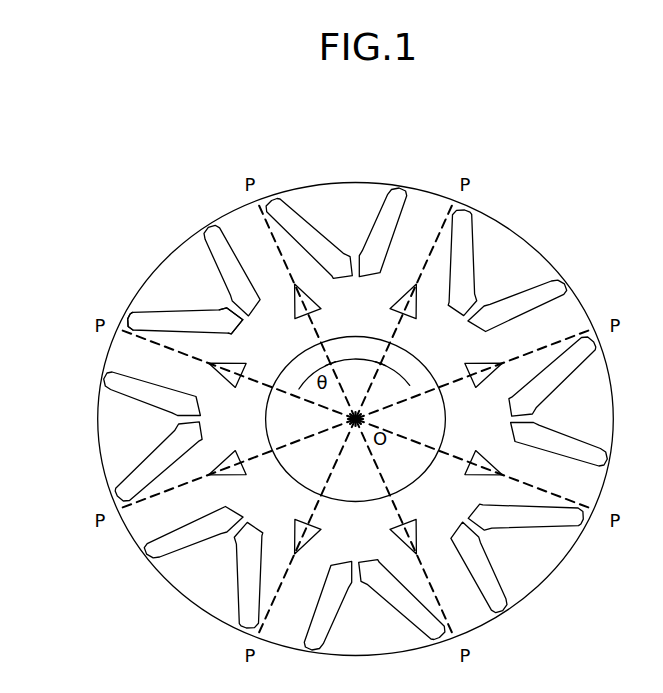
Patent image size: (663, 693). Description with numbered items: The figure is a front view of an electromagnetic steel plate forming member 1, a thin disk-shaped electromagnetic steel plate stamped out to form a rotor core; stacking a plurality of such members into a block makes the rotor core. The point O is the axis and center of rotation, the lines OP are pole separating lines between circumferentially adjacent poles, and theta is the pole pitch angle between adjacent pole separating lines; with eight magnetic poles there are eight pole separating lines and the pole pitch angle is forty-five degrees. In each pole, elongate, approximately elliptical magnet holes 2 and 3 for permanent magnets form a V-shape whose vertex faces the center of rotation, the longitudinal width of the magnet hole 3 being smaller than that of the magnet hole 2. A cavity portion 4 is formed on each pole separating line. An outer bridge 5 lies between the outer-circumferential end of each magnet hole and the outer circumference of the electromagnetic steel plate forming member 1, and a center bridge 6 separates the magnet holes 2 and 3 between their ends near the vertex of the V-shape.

The electromagnetic steel plate forming member 1 is at (505, 214).
The magnet hole 2 is at (230, 310).
The magnet hole 3 is at (232, 306).
The cavity portion 4 is at (408, 290).
The outer bridge 5 is at (206, 242).
The center bridge 6 is at (236, 313).